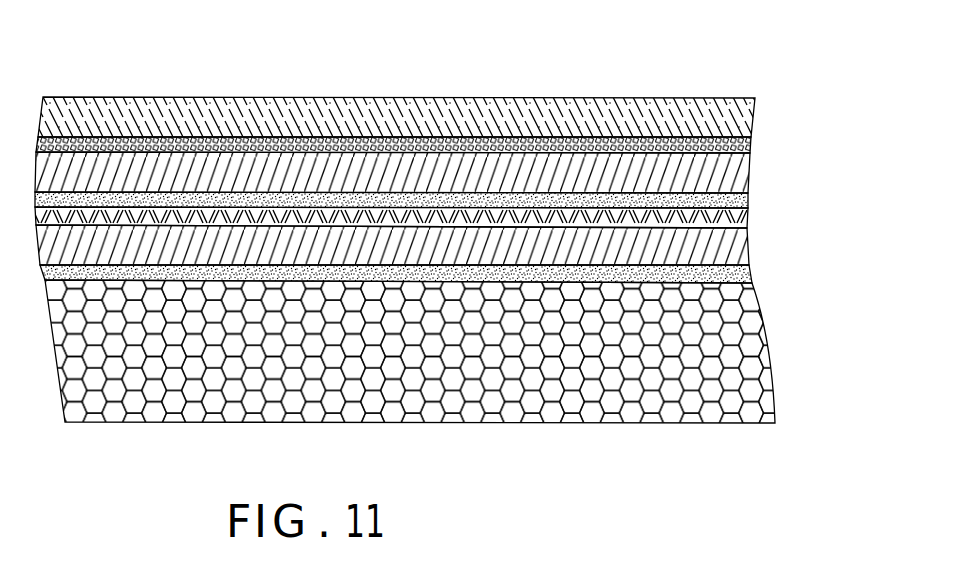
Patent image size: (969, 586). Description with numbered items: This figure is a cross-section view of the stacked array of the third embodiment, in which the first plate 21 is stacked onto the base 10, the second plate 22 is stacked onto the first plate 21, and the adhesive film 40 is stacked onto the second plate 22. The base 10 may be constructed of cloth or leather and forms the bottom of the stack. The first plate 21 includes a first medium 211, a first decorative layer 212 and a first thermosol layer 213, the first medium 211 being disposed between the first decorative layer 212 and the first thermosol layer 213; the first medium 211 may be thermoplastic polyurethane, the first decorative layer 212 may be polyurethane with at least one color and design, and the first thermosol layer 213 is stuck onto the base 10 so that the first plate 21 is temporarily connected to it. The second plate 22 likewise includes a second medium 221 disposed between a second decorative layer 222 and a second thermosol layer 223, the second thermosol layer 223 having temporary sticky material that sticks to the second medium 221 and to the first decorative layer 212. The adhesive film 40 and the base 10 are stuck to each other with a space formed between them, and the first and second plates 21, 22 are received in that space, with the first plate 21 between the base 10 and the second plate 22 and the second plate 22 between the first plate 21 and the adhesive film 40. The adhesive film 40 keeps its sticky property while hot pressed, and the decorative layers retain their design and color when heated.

The base 10 is at (427, 425).
The first plate 21 is at (451, 228).
The first medium 211 is at (717, 250).
The first decorative layer 212 is at (735, 224).
The first thermosol layer 213 is at (748, 279).
The second plate 22 is at (445, 138).
The second medium 221 is at (733, 172).
The second decorative layer 222 is at (746, 139).
The second thermosol layer 223 is at (746, 196).
The adhesive film 40 is at (701, 97).